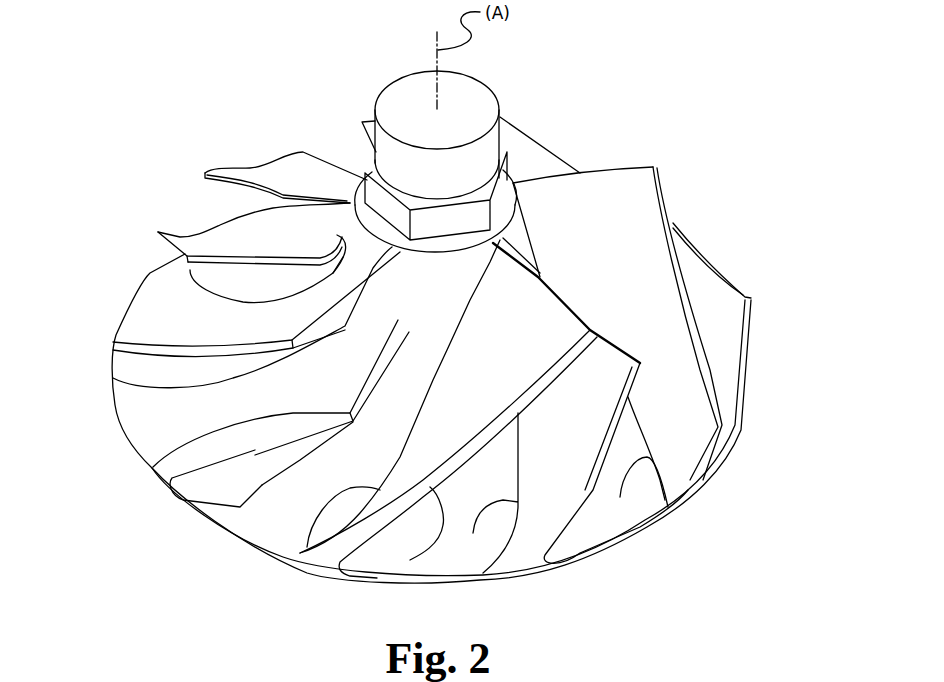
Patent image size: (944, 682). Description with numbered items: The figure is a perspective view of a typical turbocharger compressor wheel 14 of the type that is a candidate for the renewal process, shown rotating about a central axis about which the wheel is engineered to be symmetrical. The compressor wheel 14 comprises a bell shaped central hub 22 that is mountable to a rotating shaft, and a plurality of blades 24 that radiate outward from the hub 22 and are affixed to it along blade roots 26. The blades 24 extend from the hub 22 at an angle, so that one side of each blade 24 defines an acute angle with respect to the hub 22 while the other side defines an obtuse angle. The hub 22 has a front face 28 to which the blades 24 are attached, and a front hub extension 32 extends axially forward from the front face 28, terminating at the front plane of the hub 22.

The compressor wheel 14 is at (688, 64).
The central hub 22 is at (150, 417).
The blades 24 is at (227, 168).
The blade roots 26 is at (240, 417).
The front face 28 is at (647, 513).
The front hub extension 32 is at (488, 108).